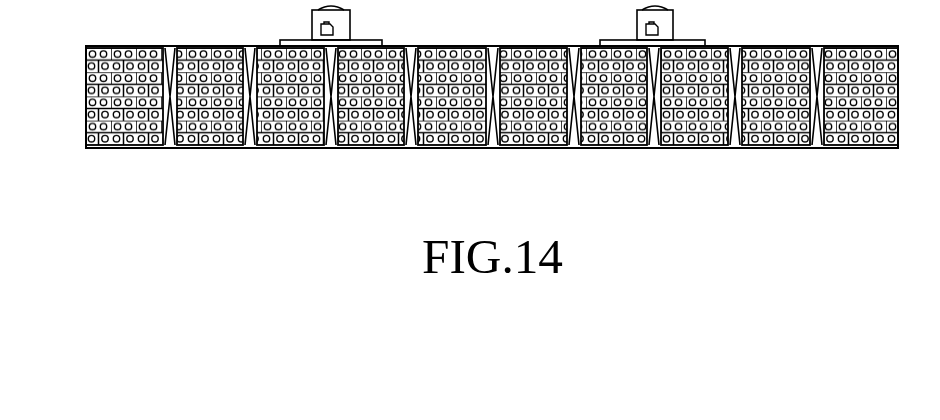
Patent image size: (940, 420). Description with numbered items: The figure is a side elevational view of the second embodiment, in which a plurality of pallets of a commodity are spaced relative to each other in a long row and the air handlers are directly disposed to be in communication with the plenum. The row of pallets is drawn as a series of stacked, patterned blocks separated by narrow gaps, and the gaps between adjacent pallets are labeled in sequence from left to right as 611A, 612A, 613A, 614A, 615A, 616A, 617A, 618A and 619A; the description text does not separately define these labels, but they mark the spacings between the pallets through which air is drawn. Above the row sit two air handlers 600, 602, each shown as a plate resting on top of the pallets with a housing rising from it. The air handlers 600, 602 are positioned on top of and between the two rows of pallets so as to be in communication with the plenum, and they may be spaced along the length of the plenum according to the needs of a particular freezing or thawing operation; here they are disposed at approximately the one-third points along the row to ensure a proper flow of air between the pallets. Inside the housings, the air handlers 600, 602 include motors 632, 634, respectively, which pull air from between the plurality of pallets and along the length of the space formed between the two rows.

The air handler 600 is at (346, 12).
The air handler 602 is at (668, 12).
The motor 632 is at (321, 27).
The motor 634 is at (646, 28).
The divider 611A is at (174, 146).
The divider 612A is at (254, 146).
The divider 613A is at (335, 146).
The divider 614A is at (415, 146).
The divider 615A is at (497, 146).
The divider 616A is at (578, 146).
The divider 617A is at (658, 146).
The divider 618A is at (739, 146).
The divider 619A is at (821, 146).